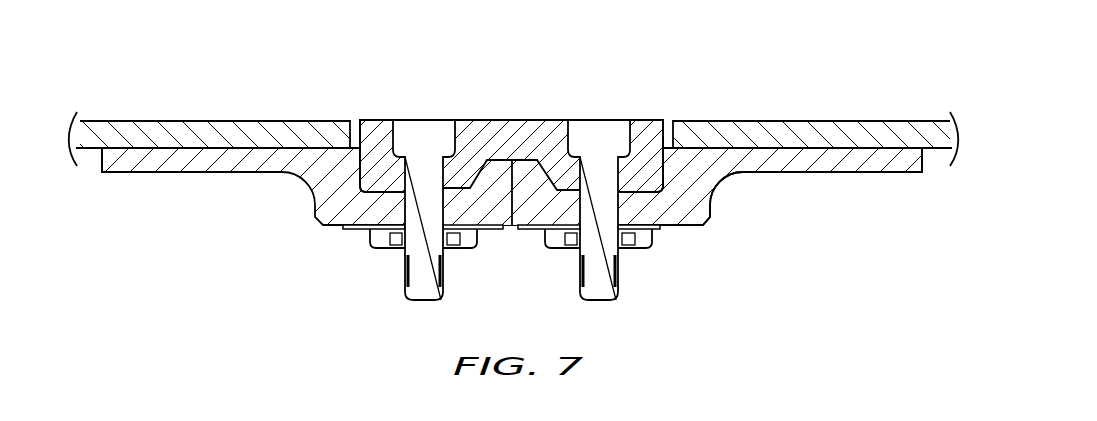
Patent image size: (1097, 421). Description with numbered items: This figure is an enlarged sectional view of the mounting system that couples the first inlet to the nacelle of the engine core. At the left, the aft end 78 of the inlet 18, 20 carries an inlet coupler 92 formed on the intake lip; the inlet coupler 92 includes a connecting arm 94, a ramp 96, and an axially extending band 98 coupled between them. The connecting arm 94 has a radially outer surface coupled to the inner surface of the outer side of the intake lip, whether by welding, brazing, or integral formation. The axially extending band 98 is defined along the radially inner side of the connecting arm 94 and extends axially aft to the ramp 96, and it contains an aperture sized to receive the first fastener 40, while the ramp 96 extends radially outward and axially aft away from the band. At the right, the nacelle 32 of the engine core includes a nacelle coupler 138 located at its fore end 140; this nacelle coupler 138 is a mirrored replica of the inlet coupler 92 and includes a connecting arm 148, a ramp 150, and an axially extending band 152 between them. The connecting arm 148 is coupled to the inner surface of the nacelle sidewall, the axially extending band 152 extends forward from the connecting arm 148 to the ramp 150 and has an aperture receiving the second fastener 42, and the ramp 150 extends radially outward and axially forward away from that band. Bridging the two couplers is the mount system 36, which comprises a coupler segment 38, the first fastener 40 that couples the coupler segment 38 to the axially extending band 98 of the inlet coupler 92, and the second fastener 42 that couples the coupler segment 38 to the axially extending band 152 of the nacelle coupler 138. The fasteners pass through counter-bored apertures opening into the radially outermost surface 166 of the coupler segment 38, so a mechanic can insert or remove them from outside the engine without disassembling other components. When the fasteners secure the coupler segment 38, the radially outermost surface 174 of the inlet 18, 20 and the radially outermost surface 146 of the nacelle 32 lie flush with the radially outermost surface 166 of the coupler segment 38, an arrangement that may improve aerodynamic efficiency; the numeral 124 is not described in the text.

The inlet 18 is at (198, 93).
The inlet 20 is at (105, 120).
The radially outermost surface 174 is at (147, 120).
The aft end 78 is at (215, 93).
The mounting plate 124 is at (230, 137).
The first fastener 40 is at (427, 147).
The radially outermost surface 166 is at (476, 134).
The coupler segment 38 is at (528, 147).
The second fastener 42 is at (598, 147).
The mount system 36 is at (648, 120).
The fore end 140 is at (782, 134).
The radially outermost surface 146 is at (845, 121).
The nacelle 32 is at (895, 120).
The connecting arm 94 is at (150, 173).
The inlet coupler 92 is at (315, 227).
The axially extending band 98 is at (372, 209).
The ramp 96 is at (487, 200).
The ramp 150 is at (523, 196).
The axially extending band 152 is at (647, 199).
The nacelle coupler 138 is at (707, 227).
The connecting arm 148 is at (828, 160).